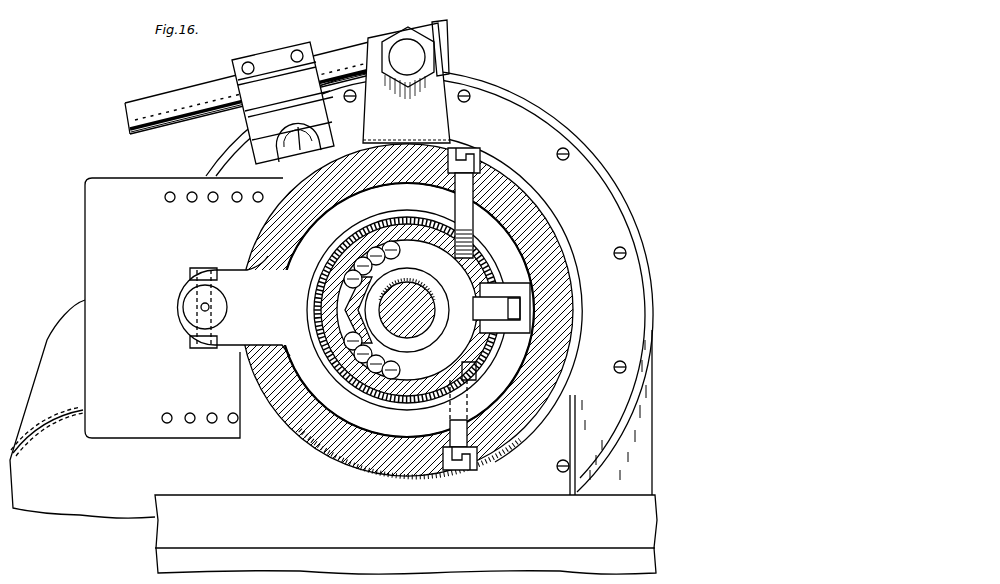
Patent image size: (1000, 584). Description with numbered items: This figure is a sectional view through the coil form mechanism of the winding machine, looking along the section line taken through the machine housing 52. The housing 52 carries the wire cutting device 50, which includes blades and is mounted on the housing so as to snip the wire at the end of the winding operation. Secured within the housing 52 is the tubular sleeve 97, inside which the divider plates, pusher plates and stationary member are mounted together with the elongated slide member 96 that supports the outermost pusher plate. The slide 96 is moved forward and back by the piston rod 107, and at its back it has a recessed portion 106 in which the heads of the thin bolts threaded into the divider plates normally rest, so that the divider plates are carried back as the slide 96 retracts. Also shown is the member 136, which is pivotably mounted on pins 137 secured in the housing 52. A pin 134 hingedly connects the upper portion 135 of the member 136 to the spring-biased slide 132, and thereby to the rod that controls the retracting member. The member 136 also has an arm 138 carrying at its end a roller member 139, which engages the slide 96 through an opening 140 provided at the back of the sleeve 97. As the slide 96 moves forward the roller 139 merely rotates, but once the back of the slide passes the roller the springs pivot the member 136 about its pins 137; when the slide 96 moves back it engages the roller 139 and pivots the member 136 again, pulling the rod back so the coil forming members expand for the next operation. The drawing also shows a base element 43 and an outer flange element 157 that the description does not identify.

The base 43 is at (606, 494).
The wire cutting device 50 is at (374, 38).
The housing 52 is at (548, 228).
The slide member 96 is at (409, 410).
The tubular sleeve 97 is at (434, 404).
The recessed portion 106 is at (405, 244).
The piston rod 107 is at (412, 322).
The slide 132 is at (186, 307).
The pin 134 is at (204, 350).
The upper portion 135 is at (190, 276).
The member 136 is at (335, 410).
The pins 137 is at (478, 160).
The arm 138 is at (510, 334).
The roller member 139 is at (487, 309).
The opening 140 is at (476, 368).
The outer flange 157 is at (640, 238).